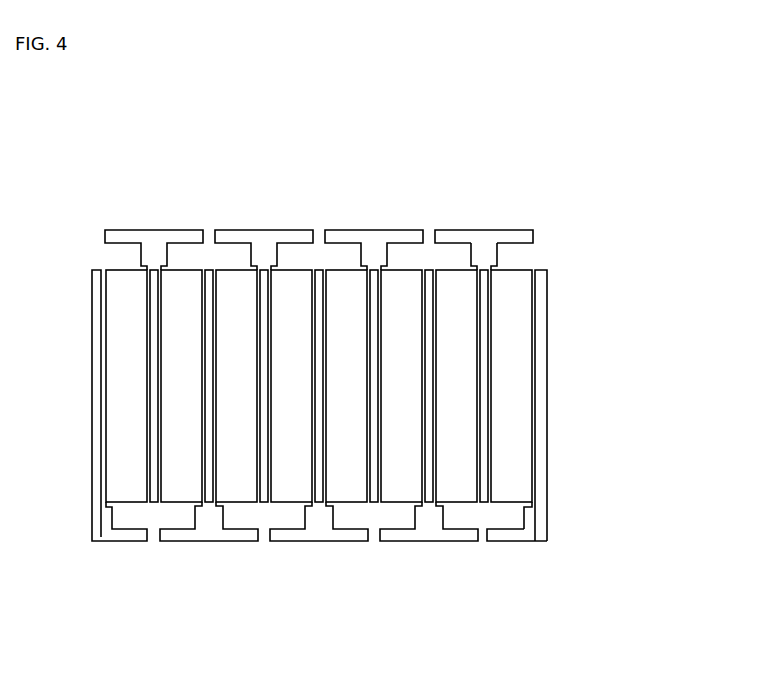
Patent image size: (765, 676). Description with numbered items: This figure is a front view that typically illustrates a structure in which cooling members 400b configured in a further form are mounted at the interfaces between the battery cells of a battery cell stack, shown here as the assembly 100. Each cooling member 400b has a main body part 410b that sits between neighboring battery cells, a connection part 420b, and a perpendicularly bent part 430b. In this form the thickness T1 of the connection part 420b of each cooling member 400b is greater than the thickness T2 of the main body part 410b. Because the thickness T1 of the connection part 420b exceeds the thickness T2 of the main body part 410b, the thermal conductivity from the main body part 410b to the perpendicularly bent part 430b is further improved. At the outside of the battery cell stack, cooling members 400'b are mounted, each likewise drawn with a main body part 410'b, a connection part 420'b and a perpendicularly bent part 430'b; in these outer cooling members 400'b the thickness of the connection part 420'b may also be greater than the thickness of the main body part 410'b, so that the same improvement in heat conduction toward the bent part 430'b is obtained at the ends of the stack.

The battery module 100 is at (122, 281).
The cooling member 400b is at (518, 208).
The perpendicularly bent part 430b is at (490, 229).
The connection part 420b is at (482, 253).
The main body part 410b is at (482, 320).
The cooling member 400'b is at (598, 453).
The end bus bar body portion 430'b is at (545, 582).
The end connecting portion 420'b is at (607, 519).
The end electrode tab 410'b is at (612, 405).
The thickness of connection part T1 is at (273, 513).
The thickness of main body part T2 is at (167, 383).